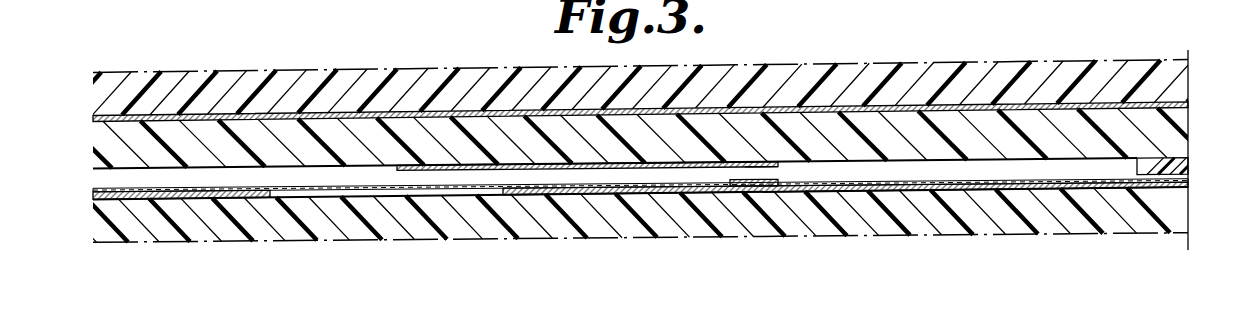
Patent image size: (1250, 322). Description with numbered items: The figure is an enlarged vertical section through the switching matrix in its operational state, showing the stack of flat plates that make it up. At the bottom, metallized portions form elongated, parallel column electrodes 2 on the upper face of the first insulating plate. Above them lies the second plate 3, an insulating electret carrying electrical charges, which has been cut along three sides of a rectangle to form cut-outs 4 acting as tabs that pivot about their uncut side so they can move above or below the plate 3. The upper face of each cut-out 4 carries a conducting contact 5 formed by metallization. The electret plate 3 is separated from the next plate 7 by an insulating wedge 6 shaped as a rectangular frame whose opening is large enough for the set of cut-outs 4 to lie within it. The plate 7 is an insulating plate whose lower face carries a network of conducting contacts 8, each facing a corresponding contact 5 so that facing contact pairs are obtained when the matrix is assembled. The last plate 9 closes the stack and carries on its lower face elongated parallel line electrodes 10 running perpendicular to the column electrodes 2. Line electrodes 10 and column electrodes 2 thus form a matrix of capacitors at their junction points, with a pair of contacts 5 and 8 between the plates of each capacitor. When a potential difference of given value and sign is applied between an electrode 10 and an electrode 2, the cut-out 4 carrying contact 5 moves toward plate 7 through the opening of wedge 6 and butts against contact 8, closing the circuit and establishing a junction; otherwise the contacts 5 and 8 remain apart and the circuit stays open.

The electrodes 2 is at (822, 186).
The second plate 3 is at (383, 186).
The cut-outs 4 is at (705, 183).
The conducting contact 5 is at (760, 180).
The insulating wedge 6 is at (1165, 167).
The plate 7 is at (1165, 126).
The conducting contacts 8 is at (750, 166).
The last plate 9 is at (1048, 73).
The electrodes 10 is at (1093, 104).